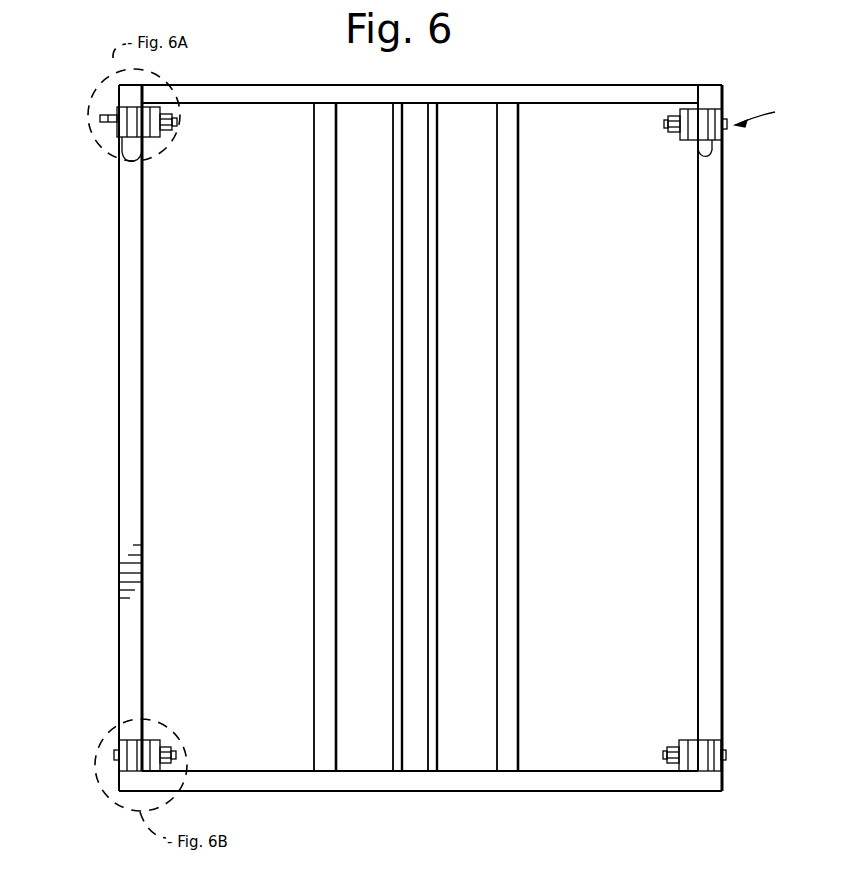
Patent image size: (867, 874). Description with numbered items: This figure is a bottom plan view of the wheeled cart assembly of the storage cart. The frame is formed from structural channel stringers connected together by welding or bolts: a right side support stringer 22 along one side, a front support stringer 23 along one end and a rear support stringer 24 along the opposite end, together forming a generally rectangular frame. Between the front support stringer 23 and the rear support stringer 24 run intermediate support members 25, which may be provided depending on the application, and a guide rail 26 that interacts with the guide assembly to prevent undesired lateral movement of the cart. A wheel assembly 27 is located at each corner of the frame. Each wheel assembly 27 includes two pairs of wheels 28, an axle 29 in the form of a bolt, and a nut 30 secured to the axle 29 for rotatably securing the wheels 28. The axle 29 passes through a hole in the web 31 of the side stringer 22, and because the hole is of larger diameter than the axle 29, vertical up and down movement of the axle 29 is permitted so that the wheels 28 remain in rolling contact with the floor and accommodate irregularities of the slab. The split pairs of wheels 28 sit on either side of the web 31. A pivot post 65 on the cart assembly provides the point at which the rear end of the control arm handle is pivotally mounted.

The right side support stringer 22 is at (120, 419).
The front support stringer 23 is at (262, 787).
The rear support stringer 24 is at (346, 87).
The intermediate support members 25 is at (332, 752).
The guide rail 26 is at (433, 115).
The wheel assembly 27 is at (766, 118).
The wheels 28 is at (150, 113).
The axle 29 is at (177, 121).
The nut 30 is at (668, 122).
The web 31 is at (138, 170).
The pivot post 65 is at (103, 117).